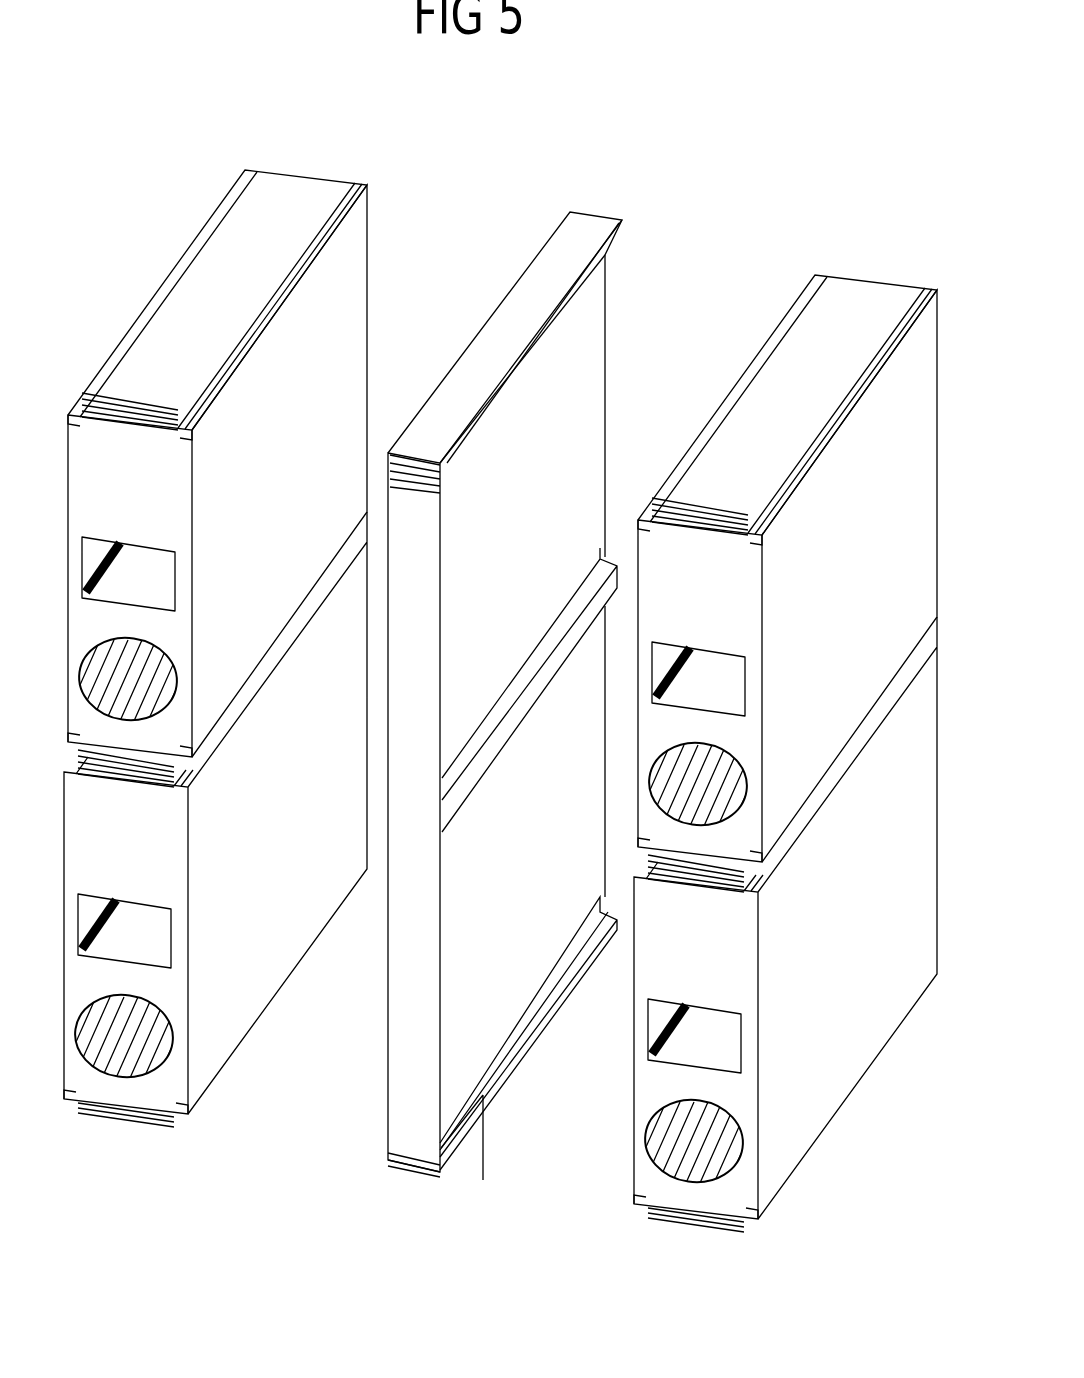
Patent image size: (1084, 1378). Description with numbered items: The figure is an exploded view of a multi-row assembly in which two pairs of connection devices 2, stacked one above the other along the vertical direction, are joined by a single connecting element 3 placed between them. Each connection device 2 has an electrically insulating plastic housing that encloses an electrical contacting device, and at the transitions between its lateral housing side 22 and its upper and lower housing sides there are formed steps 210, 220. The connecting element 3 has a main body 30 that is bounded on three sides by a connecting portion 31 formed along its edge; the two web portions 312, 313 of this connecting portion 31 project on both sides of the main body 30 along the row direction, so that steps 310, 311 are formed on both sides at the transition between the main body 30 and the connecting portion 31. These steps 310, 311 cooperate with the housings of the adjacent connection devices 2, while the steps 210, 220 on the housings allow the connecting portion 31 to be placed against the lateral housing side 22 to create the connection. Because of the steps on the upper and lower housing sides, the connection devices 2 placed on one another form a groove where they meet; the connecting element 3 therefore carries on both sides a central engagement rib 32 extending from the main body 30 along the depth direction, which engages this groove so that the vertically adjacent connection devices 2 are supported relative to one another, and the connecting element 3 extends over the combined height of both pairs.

The connection device 2 is at (496, 705).
The lateral housing side 22 is at (233, 638).
The step 220 is at (250, 347).
The step 210 is at (663, 473).
The connecting element 3 is at (487, 680).
The main body 30 is at (585, 388).
The connecting portion 31 is at (520, 308).
The engagement rib 32 is at (487, 758).
The step 310 is at (484, 1095).
The step 311 is at (378, 1140).
The web portion 312 is at (438, 1168).
The web portion 313 is at (385, 1163).